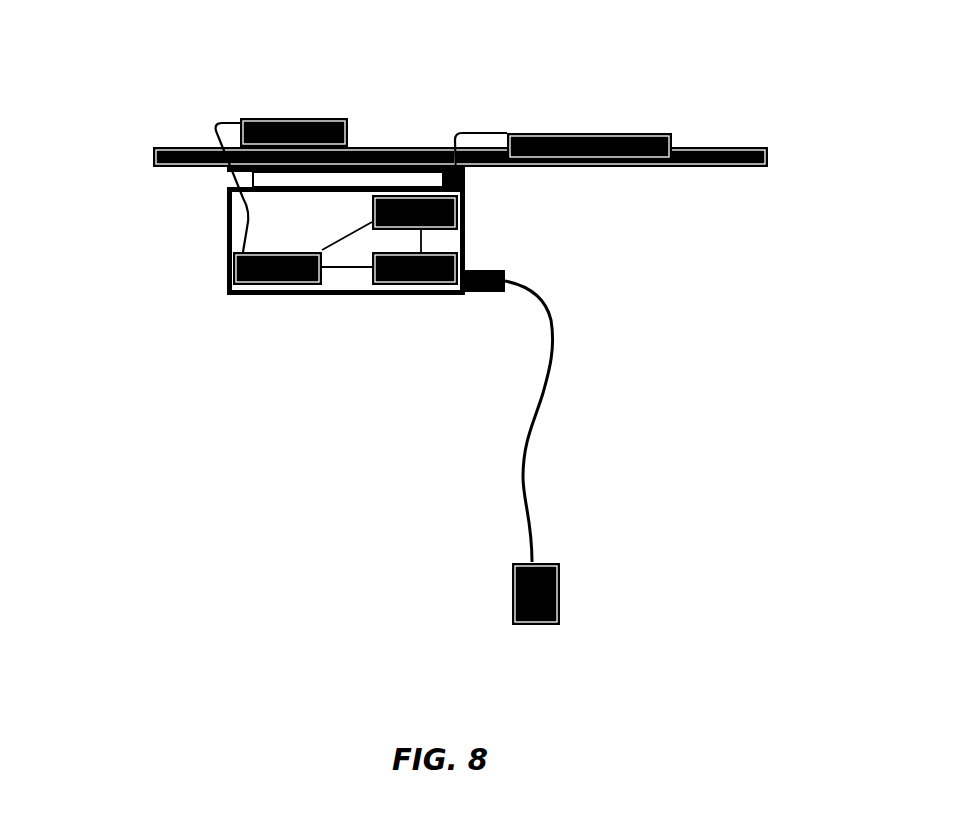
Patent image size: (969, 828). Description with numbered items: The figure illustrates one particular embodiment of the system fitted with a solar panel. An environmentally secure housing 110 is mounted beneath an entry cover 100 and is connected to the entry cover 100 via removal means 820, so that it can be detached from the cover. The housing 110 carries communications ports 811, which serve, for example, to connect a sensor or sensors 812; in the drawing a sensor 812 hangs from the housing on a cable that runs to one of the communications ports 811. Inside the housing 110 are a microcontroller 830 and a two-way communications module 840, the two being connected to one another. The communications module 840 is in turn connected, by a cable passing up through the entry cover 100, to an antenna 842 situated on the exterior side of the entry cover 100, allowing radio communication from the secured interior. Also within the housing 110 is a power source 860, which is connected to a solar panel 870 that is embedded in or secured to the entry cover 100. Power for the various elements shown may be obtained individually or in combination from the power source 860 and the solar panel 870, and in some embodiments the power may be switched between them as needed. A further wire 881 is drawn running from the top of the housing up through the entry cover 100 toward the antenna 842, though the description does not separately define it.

The entry cover 100 is at (445, 147).
The environmentally secure housing 110 is at (208, 276).
The communications ports 811 is at (528, 270).
The sensor 812 is at (574, 570).
The removal means 820 is at (478, 181).
The microcontroller 830 is at (420, 296).
The two-way communications module 840 is at (265, 296).
The antenna 842 is at (290, 99).
The power source 860 is at (416, 202).
The solar panel 870 is at (692, 126).
The wire 881 is at (208, 184).